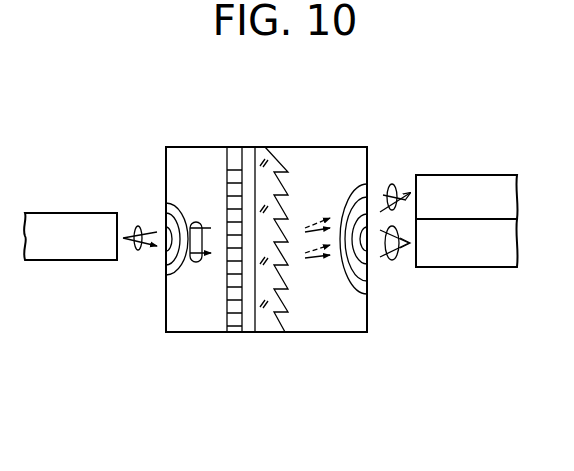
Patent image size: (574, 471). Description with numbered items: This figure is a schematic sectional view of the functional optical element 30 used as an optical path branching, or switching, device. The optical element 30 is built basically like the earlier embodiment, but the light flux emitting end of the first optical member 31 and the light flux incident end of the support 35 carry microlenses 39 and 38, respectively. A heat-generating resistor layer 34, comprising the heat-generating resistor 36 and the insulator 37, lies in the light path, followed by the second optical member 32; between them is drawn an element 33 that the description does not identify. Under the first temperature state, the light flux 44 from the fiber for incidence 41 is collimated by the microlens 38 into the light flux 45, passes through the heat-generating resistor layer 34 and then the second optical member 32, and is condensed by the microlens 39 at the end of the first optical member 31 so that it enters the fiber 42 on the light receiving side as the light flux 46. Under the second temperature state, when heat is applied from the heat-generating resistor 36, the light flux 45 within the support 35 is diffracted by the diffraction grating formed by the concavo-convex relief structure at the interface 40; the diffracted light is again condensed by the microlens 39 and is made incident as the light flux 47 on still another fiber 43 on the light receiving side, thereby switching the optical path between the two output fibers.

The optical element 30 is at (359, 334).
The first optical member 31 is at (338, 160).
The second optical member 32 is at (266, 150).
The transparent electrode 33 is at (255, 149).
The heat-generating resistor layer 34 is at (241, 149).
The support 35 is at (176, 170).
The heat-generating resistor 36 is at (233, 292).
The insulator 37 is at (231, 148).
The microlens 38 is at (166, 265).
The microlens 39 is at (367, 290).
The interface 40 is at (281, 330).
The fiber for incidence 41 is at (66, 232).
The fiber on the light receiving side 42 is at (473, 253).
The fiber on the light receiving side 43 is at (464, 182).
The light flux 44 is at (138, 226).
The light flux 45 is at (190, 262).
The light flux 46 is at (392, 260).
The light flux 47 is at (389, 184).